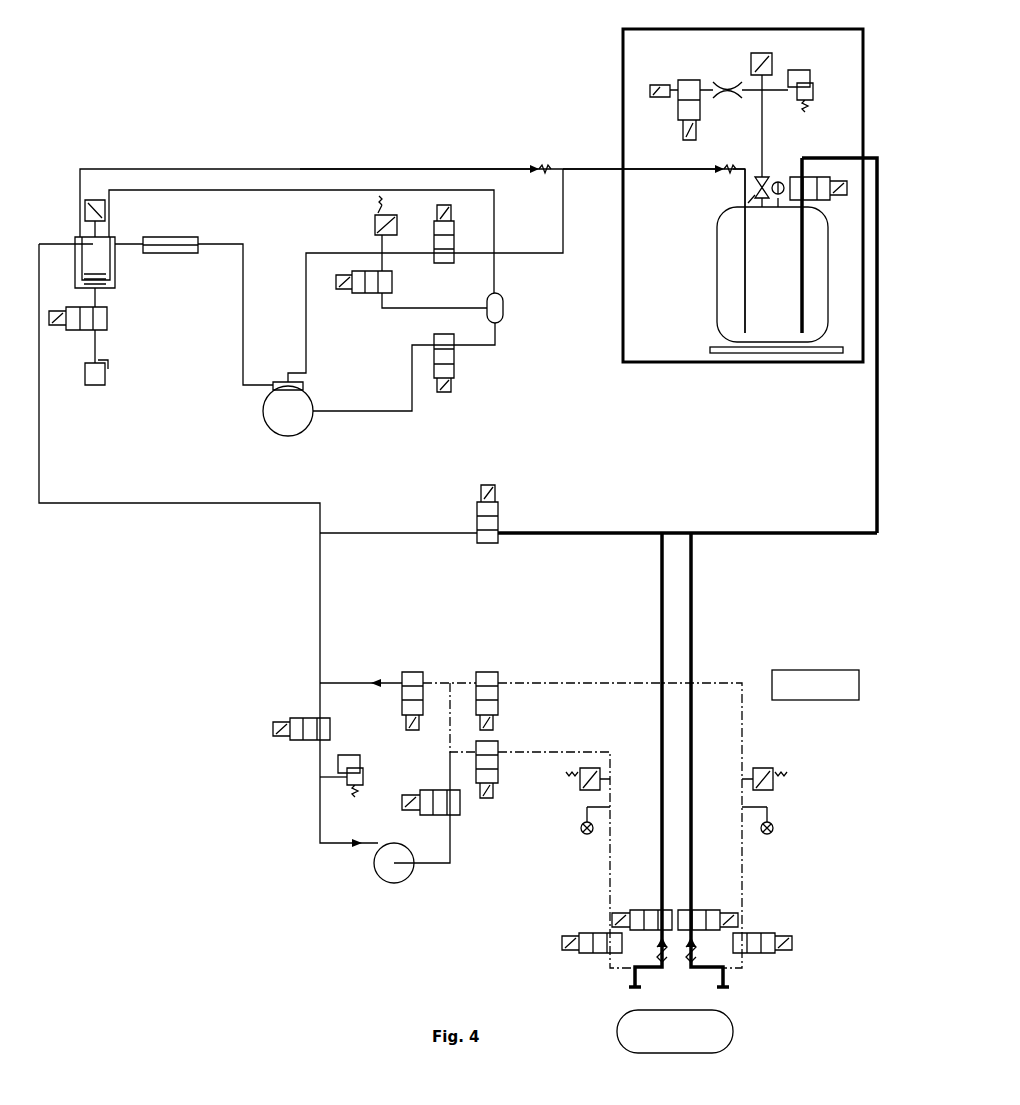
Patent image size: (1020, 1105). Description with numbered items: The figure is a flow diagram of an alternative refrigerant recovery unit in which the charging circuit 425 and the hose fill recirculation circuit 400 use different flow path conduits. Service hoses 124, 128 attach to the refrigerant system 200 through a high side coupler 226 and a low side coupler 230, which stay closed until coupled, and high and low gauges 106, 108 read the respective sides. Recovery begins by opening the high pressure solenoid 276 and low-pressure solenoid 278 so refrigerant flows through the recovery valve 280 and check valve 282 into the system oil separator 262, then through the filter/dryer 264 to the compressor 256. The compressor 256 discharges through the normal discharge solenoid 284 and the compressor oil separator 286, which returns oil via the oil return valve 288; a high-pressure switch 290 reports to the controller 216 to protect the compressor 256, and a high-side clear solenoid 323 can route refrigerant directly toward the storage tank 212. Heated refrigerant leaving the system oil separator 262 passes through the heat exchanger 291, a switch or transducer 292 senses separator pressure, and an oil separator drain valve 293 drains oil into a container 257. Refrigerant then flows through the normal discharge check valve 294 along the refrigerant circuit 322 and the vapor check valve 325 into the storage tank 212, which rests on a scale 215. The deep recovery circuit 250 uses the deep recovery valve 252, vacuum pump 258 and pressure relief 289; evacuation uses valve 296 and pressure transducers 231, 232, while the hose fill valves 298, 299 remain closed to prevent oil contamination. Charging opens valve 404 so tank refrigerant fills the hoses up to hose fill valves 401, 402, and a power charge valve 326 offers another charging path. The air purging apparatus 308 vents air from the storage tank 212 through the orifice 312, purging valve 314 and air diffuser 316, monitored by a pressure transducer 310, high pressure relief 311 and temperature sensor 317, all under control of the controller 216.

The high gauge 106 is at (580, 829).
The low gauge 108 is at (775, 829).
The service hose 124 is at (660, 826).
The service hose 128 is at (693, 826).
The refrigerant system 200 is at (738, 1033).
The storage tank 212 is at (716, 264).
The scale 215 is at (712, 347).
The controller 216 is at (862, 690).
The coupler (high side) 226 is at (632, 990).
The coupler (low side) 230 is at (727, 990).
The pressure transducer 231 is at (775, 790).
The pressure transducer 232 is at (578, 794).
The deep recovery circuit 250 is at (310, 805).
The deep recovery valve 252 is at (288, 742).
The compressor 256 is at (270, 430).
The container 257 is at (112, 372).
The vacuum pump 258 is at (412, 868).
The system oil separator 262 is at (117, 268).
The filter/dryer 264 is at (178, 237).
The high pressure solenoid 276 is at (500, 770).
The low-pressure solenoid 278 is at (500, 703).
The recovery valve 280 is at (402, 700).
The check valve 282 is at (378, 680).
The normal discharge solenoid 284 is at (395, 285).
The compressor oil separator 286 is at (506, 298).
The oil return valve 288 is at (456, 360).
The pressure relief 289 is at (363, 779).
The high-pressure switch 290 is at (372, 222).
The heat exchanger 291 is at (112, 290).
The switch or transducer 292 is at (108, 212).
The oil separator drain valve 293 is at (110, 316).
The normal discharge check valve 294 is at (528, 167).
The valve 296 is at (404, 808).
The high side charge valve 298 is at (630, 912).
The low side charge valve 299 is at (720, 912).
The air purging apparatus 308 is at (872, 110).
The pressure transducer 310 is at (776, 52).
The high pressure relief 311 is at (800, 107).
The orifice 312 is at (727, 82).
The purging valve 314 is at (680, 125).
The air diffuser 316 is at (660, 82).
The temperature sensor 317 is at (768, 177).
The refrigerant circuit 322 is at (690, 171).
The high-side clear solenoid 323 is at (437, 214).
The vapor check valve 325 is at (718, 178).
The power charge valve 326 is at (480, 545).
The hose fill recirculation circuit 400 is at (753, 727).
The hose fill valve 401 is at (582, 954).
The hose fill valve 402 is at (768, 955).
The valve 404 is at (818, 177).
The charging circuit 425 is at (700, 590).